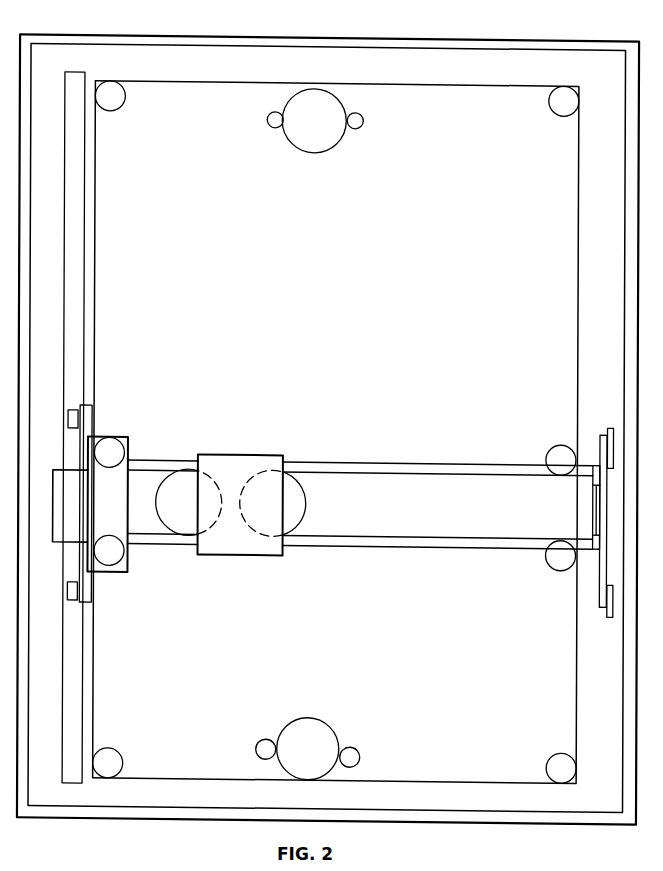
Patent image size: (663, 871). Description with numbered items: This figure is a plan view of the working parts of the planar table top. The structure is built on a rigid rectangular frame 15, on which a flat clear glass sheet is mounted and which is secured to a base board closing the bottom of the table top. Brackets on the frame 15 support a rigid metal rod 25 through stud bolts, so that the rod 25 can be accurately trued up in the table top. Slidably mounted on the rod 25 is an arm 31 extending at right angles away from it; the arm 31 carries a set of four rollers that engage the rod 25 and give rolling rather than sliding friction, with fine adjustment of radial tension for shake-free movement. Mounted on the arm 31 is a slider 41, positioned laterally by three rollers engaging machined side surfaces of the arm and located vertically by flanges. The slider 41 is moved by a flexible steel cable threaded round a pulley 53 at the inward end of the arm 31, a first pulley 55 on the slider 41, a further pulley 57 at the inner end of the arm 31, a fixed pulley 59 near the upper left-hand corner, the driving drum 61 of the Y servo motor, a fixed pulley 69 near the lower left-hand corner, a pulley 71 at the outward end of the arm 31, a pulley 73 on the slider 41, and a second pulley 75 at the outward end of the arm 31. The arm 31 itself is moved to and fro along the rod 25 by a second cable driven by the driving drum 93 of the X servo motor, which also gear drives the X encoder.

The rigid rectangular frame 15 is at (367, 48).
The rigid metal rod 25 is at (85, 201).
The arm 31 is at (96, 275).
The slider 41 is at (240, 562).
The pulley 53 is at (117, 440).
The first pulley 55 is at (188, 542).
The further pulley 57 is at (112, 574).
The fixed pulley 59 is at (120, 754).
The driving drum 61 is at (320, 716).
The fixed pulley 69 is at (560, 749).
The pulley 71 is at (555, 573).
The pulley 73 is at (314, 500).
The second pulley 75 is at (561, 436).
The driving drum 93 is at (306, 153).